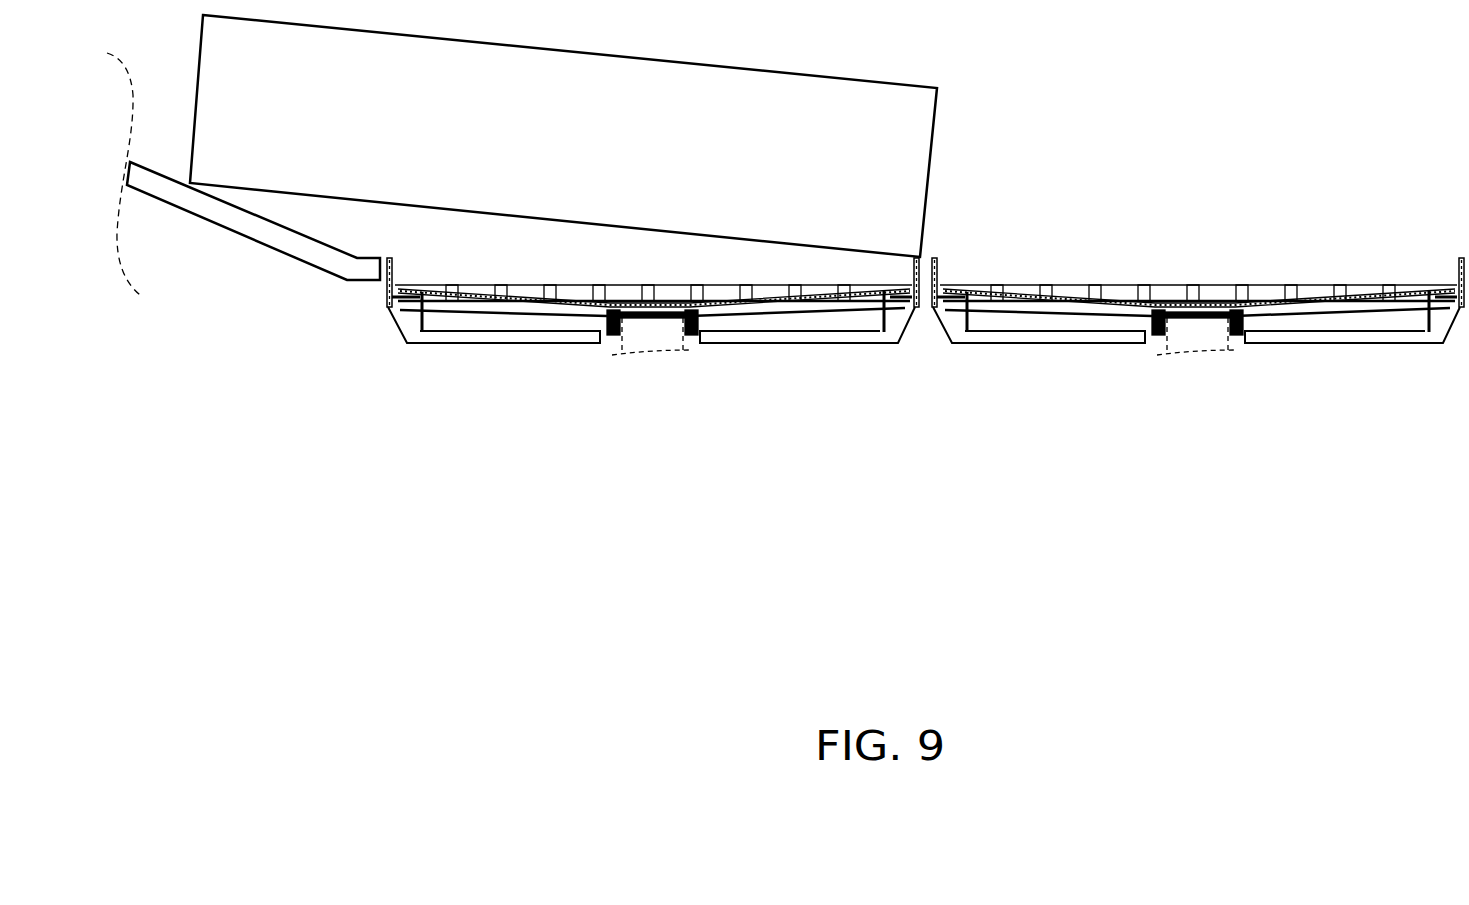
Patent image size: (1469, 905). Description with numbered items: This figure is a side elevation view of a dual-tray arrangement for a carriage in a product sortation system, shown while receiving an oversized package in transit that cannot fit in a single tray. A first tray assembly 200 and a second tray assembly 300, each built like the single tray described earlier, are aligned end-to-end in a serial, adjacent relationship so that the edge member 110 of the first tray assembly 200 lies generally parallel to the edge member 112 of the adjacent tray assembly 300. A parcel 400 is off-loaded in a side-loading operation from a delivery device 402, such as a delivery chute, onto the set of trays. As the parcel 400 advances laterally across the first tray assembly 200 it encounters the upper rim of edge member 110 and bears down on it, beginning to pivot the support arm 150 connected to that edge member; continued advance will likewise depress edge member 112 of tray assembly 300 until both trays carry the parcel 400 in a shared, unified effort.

The edge member 110 is at (905, 272).
The edge member 112 is at (377, 297).
The support arm 150 is at (818, 357).
The tray assembly 200 is at (581, 390).
The tray assembly 300 is at (1215, 383).
The parcel 400 is at (524, 42).
The delivery device 402 is at (251, 250).